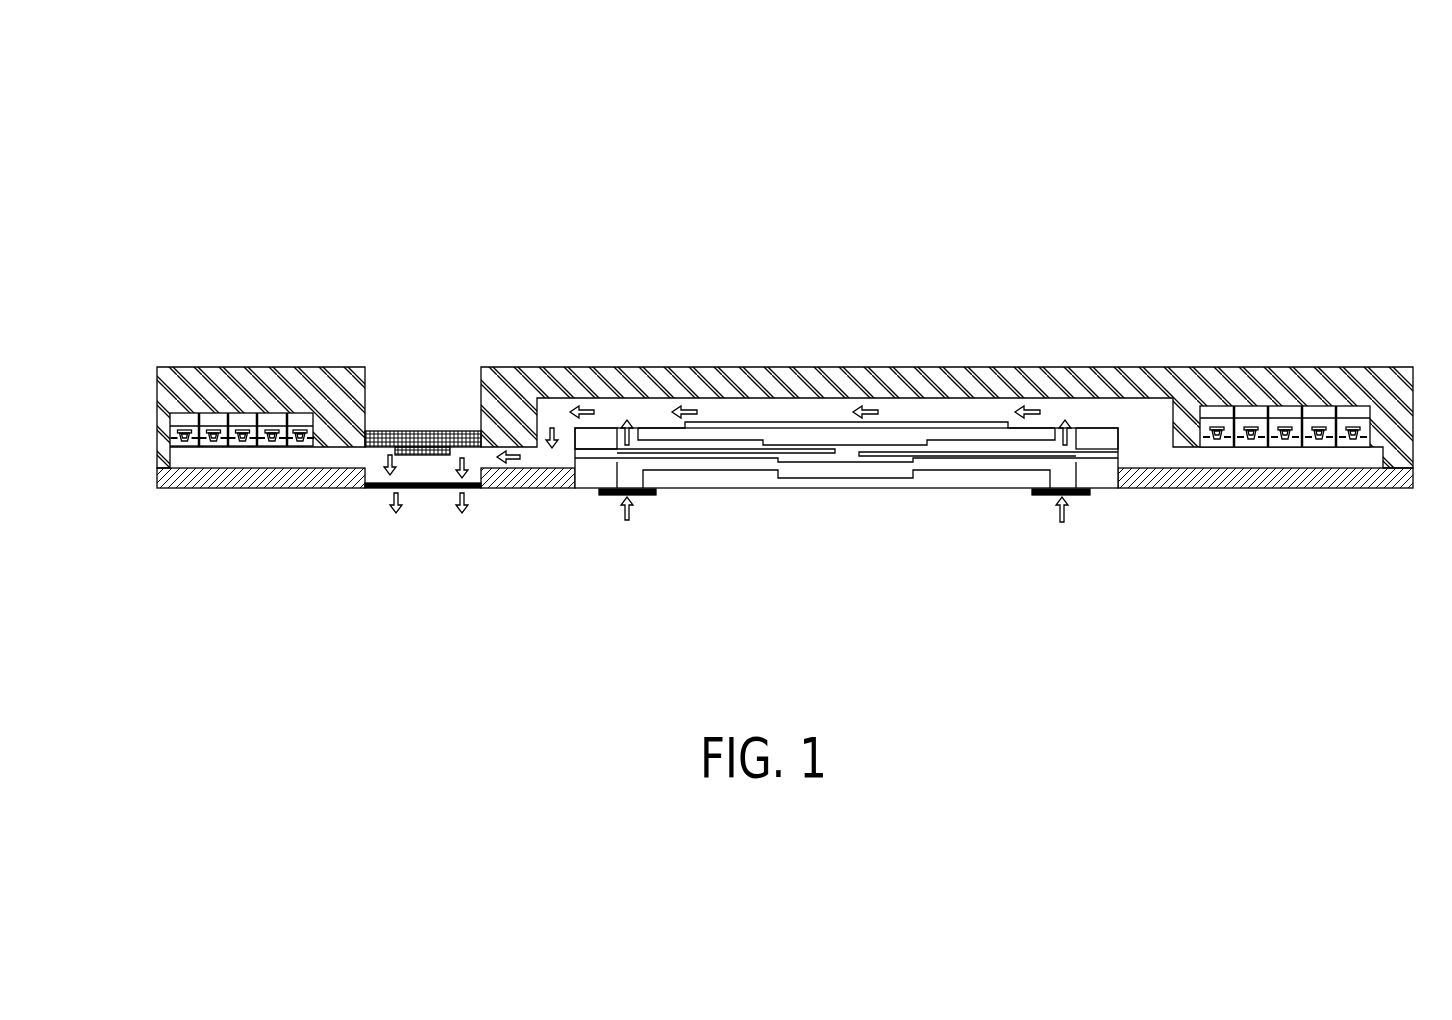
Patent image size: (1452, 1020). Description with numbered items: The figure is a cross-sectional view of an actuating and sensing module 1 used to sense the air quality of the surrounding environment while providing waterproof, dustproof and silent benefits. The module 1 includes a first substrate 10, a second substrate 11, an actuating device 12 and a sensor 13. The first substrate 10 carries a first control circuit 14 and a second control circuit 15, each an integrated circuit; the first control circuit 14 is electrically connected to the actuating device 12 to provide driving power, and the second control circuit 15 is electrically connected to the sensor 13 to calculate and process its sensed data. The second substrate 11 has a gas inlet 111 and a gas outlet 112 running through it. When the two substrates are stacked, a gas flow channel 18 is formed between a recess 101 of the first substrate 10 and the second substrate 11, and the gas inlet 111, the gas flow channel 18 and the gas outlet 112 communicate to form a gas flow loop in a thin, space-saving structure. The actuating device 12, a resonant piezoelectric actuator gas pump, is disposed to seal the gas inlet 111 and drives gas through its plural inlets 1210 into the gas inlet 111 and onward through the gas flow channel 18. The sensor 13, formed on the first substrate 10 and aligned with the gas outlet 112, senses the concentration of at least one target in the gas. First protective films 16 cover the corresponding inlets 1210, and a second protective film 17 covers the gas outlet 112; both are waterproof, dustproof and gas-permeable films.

The actuating and sensing module 1 is at (1332, 124).
The first substrate 10 is at (220, 393).
The recess 101 is at (912, 405).
The second substrate 11 is at (247, 490).
The gas inlet 111 is at (598, 513).
The gas outlet 112 is at (383, 513).
The actuating device 12 is at (860, 440).
The inlets 1210 is at (633, 478).
The sensor 13 is at (428, 440).
The first control circuit 14 is at (1276, 420).
The second control circuit 15 is at (242, 420).
The first protective film 16 is at (643, 496).
The second protective film 17 is at (422, 490).
The gas flow channel 18 is at (648, 416).